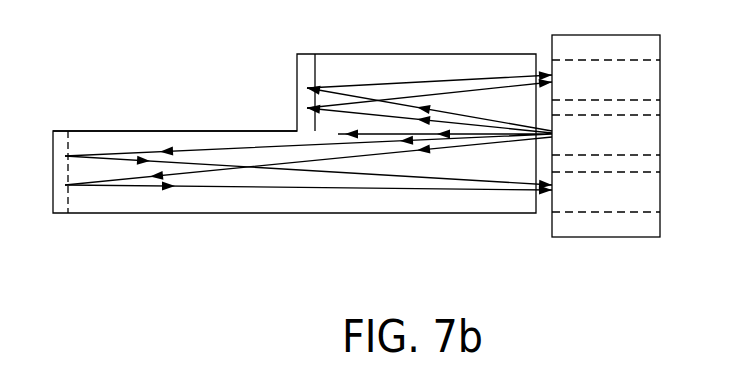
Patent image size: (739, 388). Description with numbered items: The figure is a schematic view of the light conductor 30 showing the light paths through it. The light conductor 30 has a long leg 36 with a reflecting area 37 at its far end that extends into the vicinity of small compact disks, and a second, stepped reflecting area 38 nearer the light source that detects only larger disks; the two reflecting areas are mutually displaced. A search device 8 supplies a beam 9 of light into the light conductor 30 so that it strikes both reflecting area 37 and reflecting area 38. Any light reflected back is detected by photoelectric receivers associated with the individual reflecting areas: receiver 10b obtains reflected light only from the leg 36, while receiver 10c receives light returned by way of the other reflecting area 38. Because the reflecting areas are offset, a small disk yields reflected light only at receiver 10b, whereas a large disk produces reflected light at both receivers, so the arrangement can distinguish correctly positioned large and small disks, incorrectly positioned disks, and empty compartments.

The search device 8 is at (653, 132).
The beam of light 9 is at (472, 111).
The receiver 10b is at (653, 190).
The receiver 10c is at (653, 77).
The light conductor 30 is at (294, 159).
The leg 36 is at (127, 142).
The reflecting area 37 is at (58, 205).
The reflecting area 38 is at (307, 101).